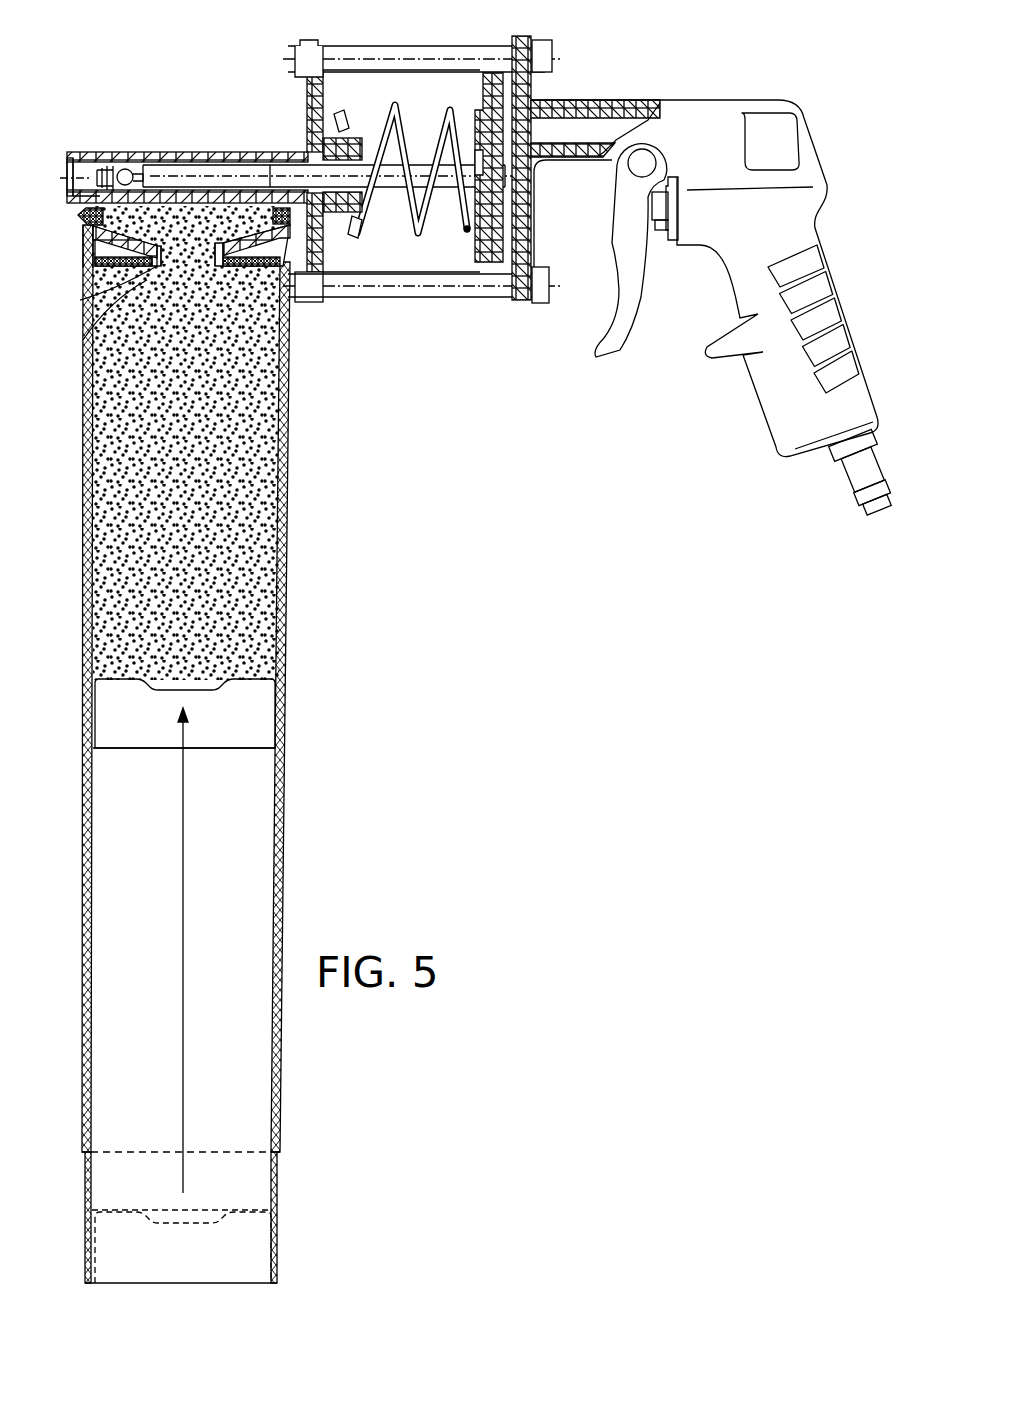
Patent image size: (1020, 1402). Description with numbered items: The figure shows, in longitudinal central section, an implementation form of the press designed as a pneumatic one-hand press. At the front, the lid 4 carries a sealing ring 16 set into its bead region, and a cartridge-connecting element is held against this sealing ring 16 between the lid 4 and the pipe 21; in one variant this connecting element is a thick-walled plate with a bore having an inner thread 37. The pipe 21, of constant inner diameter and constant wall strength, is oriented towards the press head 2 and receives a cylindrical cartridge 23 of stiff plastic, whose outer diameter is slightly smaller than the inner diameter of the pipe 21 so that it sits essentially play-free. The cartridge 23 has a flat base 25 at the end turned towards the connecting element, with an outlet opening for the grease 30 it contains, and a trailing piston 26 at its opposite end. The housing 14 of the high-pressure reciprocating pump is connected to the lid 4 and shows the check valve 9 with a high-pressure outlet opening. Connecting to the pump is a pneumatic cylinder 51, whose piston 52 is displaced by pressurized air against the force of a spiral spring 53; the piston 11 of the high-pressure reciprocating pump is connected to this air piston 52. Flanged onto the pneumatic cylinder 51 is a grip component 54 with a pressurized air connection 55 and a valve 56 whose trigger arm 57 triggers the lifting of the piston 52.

The press head 2 is at (187, 145).
The lid 4 is at (80, 214).
The check valve 9 is at (72, 150).
The piston 11 is at (287, 168).
The housing 14 is at (196, 158).
The sealing ring 16 is at (93, 234).
The pipe 21 is at (88, 998).
The cartridge 23 is at (93, 490).
The base 25 is at (85, 298).
The trailing piston 26 is at (99, 728).
The grease 30 is at (93, 606).
The inner thread 37 is at (90, 338).
The pneumatic cylinder 51 is at (458, 44).
The piston 52 is at (518, 98).
The spiral spring 53 is at (412, 222).
The grip component 54 is at (818, 140).
The pressurized air connection 55 is at (850, 470).
The valve 56 is at (663, 238).
The trigger arm 57 is at (618, 320).